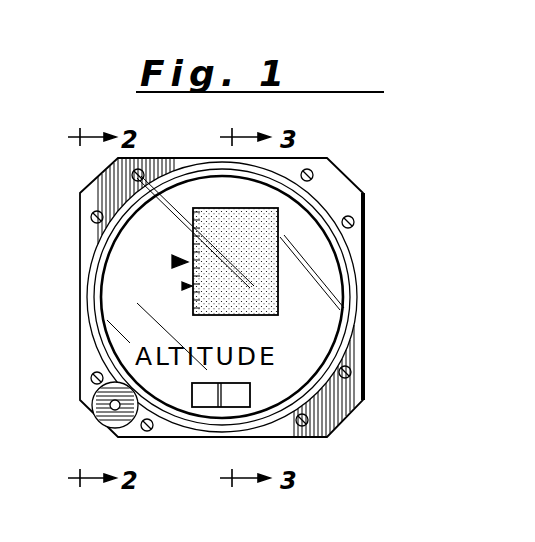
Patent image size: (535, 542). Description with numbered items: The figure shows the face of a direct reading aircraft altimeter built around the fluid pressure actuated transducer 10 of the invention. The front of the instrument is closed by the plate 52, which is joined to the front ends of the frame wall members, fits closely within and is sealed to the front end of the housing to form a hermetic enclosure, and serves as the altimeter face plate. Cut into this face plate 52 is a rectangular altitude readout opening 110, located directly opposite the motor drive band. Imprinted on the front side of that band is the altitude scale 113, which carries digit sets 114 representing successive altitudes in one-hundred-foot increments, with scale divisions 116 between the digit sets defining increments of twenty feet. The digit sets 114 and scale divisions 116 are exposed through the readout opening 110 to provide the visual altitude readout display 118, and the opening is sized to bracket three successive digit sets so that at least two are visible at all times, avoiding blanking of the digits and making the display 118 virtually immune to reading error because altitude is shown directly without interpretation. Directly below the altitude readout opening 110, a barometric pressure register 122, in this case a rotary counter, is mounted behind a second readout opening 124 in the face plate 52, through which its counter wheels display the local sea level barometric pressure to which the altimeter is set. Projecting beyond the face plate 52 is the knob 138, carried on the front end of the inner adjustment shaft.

The fluid pressure actuated transducer 10 is at (393, 213).
The plate 52 is at (333, 338).
The altitude readout opening 110 is at (278, 305).
The altitude scale 113 is at (242, 197).
The digit sets 114 is at (247, 254).
The scale divisions 116 is at (193, 241).
The visual altitude readout display 118 is at (186, 286).
The barometric pressure register 122 is at (236, 407).
The readout opening 124 is at (210, 407).
The knob 138 is at (106, 416).